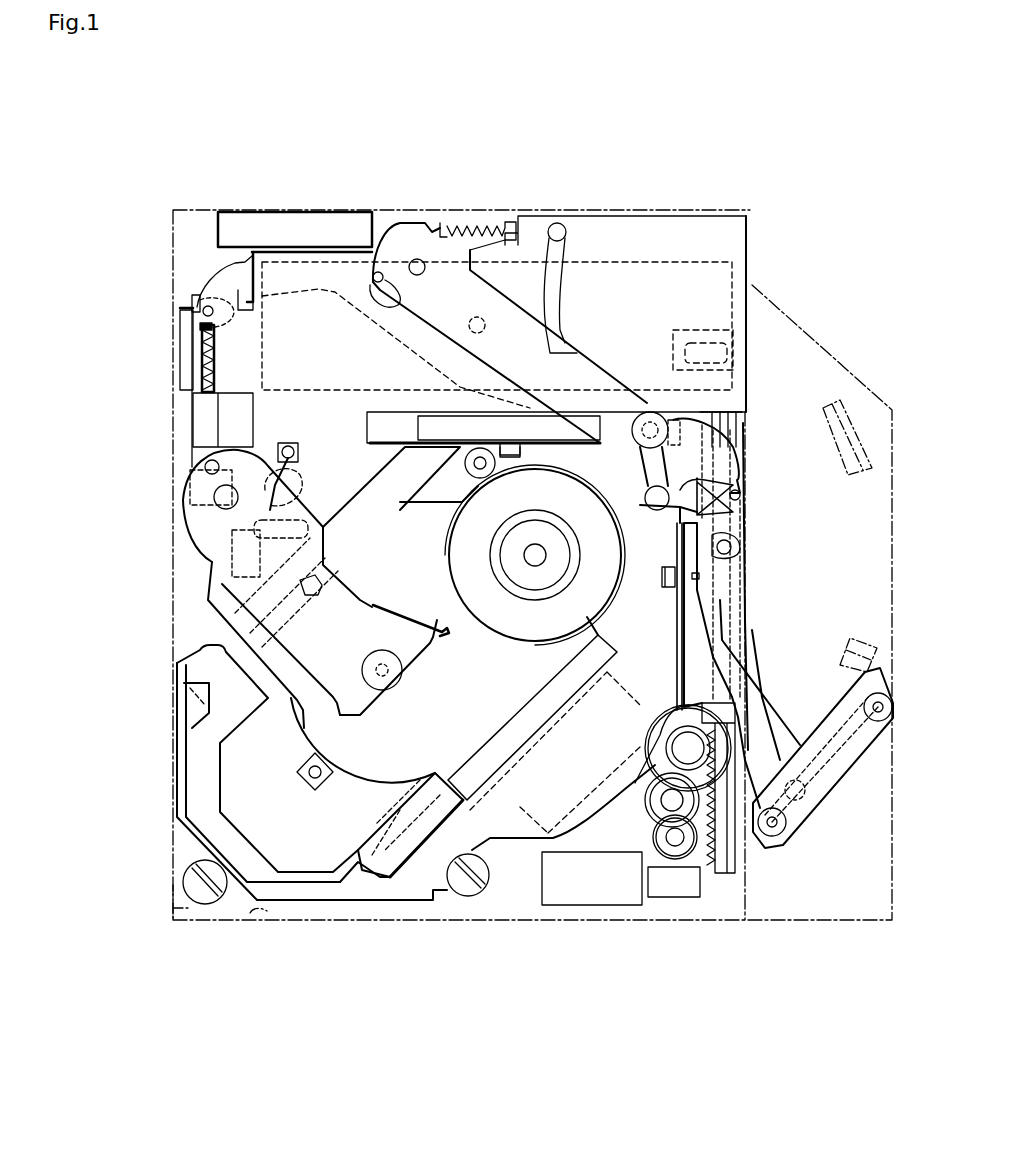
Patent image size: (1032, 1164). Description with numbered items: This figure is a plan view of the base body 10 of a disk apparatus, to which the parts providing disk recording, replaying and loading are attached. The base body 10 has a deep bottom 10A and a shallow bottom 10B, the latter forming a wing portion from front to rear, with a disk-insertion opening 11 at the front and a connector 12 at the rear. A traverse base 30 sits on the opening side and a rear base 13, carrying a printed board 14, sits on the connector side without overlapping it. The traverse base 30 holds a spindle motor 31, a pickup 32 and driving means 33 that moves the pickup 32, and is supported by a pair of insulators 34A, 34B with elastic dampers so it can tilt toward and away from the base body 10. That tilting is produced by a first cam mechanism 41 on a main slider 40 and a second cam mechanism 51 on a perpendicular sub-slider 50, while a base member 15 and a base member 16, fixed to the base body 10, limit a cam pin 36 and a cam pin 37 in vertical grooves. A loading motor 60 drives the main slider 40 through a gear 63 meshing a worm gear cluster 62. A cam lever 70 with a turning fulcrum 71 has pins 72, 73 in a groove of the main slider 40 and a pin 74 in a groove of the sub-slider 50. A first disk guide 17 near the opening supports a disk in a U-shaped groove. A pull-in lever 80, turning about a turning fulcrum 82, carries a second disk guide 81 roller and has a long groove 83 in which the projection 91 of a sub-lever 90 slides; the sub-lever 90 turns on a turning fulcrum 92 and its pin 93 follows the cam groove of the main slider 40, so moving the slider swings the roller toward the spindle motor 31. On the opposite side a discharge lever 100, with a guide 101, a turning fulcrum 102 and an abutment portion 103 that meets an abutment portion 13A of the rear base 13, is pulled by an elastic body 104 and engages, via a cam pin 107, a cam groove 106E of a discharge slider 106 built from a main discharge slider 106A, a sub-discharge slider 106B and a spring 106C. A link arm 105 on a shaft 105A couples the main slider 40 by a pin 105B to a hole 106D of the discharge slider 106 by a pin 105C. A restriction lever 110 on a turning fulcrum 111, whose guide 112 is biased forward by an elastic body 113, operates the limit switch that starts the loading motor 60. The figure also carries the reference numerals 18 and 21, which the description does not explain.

The base body 10 is at (309, 922).
The deep bottom 10A is at (250, 913).
The shallow bottom 10B is at (825, 377).
The disk-insertion opening 11 is at (457, 917).
The connector 12 is at (278, 222).
The rear base 13 is at (740, 243).
The abutment portion 13A is at (247, 262).
The printed board 14 is at (673, 420).
The base member 15 is at (673, 618).
The base member 16 is at (433, 447).
The first disk guide 17 is at (172, 893).
The roller 18 is at (473, 473).
The case 21 is at (845, 913).
The traverse base 30 is at (390, 908).
The spindle motor 31 is at (533, 555).
The pickup 32 is at (317, 767).
The driving means 33 is at (522, 742).
The insulator 34A is at (197, 907).
The insulator 34B is at (477, 898).
The cam pin 36 is at (670, 580).
The cam pin 37 is at (517, 445).
The main slider 40 is at (697, 598).
The first cam mechanism 41 is at (699, 576).
The sub-slider 50 is at (437, 430).
The second cam mechanism 51 is at (500, 420).
The loading motor 60 is at (560, 893).
The worm gear cluster 62 is at (650, 842).
The gear 63 is at (662, 890).
The cam lever 70 is at (720, 468).
The turning fulcrum 71 is at (662, 498).
The pin 72 is at (740, 495).
The pin 73 is at (737, 440).
The pin 74 is at (468, 348).
The pull-in lever 80 is at (833, 773).
The second disk guide 81 is at (780, 830).
The turning fulcrum 82 is at (878, 722).
The long groove 83 is at (810, 787).
The sub-lever 90 is at (753, 707).
The projection 91 is at (797, 810).
The turning fulcrum 92 is at (733, 547).
The pin 93 is at (753, 630).
The discharge lever 100 is at (353, 610).
The guide 101 is at (400, 678).
The turning fulcrum 102 is at (222, 497).
The abutment portion 103 is at (395, 617).
The elastic body 104 is at (300, 477).
The link arm 105 is at (305, 300).
The shaft 105A is at (480, 323).
The pin 105B is at (740, 330).
The pin 105C is at (200, 318).
The discharge slider 106 is at (72, 325).
The main discharge slider 106A is at (193, 432).
The sub-discharge slider 106B is at (200, 338).
The spring 106C is at (213, 350).
The hole 106D is at (237, 313).
The cam groove 106E is at (205, 413).
The cam pin 107 is at (192, 463).
The restriction lever 110 is at (403, 220).
The turning fulcrum 111 is at (420, 262).
The guide 112 is at (647, 403).
The elastic body 113 is at (480, 220).